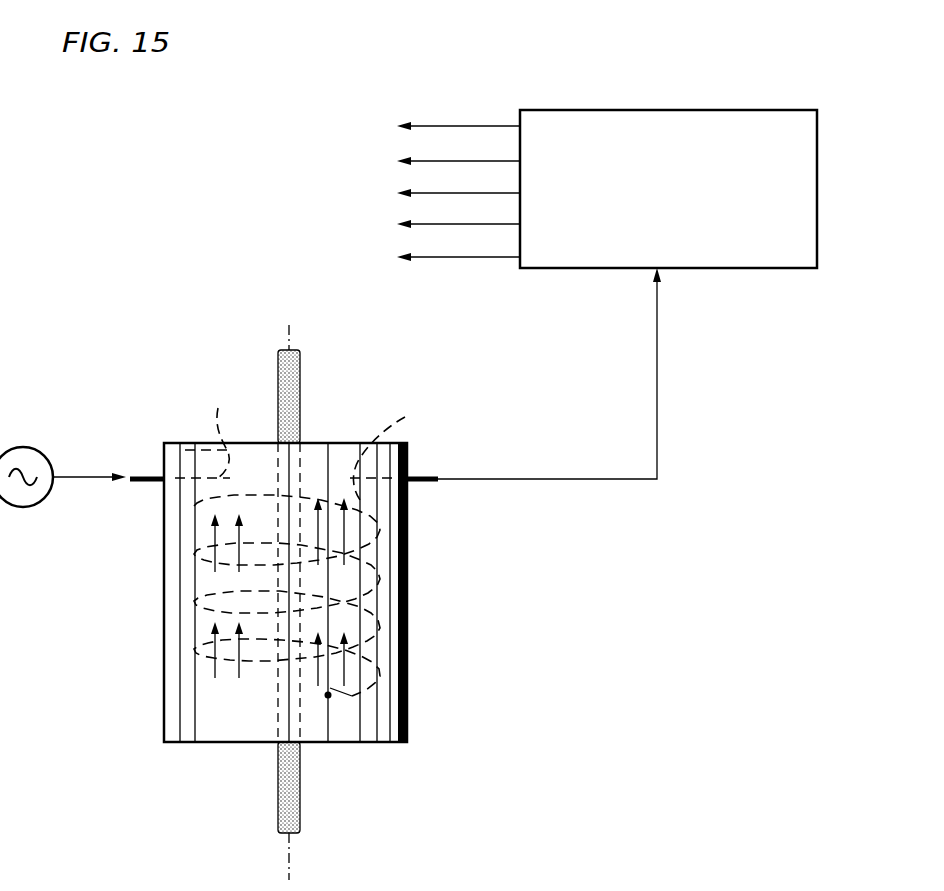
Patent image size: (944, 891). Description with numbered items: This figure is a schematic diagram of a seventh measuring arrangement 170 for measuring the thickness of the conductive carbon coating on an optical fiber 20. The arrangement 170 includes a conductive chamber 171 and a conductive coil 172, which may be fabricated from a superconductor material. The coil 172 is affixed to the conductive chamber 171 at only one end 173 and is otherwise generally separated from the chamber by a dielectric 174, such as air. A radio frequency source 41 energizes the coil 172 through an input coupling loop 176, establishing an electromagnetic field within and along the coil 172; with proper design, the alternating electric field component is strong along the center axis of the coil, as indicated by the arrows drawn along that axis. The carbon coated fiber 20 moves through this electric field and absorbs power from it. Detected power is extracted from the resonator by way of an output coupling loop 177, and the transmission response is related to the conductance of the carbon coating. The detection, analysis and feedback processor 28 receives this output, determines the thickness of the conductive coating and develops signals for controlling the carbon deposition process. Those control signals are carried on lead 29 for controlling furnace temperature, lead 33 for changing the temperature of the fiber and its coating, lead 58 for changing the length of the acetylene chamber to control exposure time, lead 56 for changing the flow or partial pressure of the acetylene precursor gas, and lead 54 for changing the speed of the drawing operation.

The detection, analysis and feedback processor 28 is at (750, 109).
The lead 29 is at (438, 124).
The lead 33 is at (458, 160).
The lead 58 is at (472, 192).
The lead 56 is at (472, 223).
The lead 54 is at (480, 258).
The source 41 is at (32, 451).
The measuring arrangement 170 is at (147, 393).
The conductive chamber 171 is at (405, 562).
The fiber 20 is at (300, 390).
The conductive coil 172 is at (405, 622).
The end 173 is at (328, 698).
The dielectric 174 is at (241, 713).
The input coupling loop 176 is at (208, 426).
The output coupling loop 177 is at (390, 440).